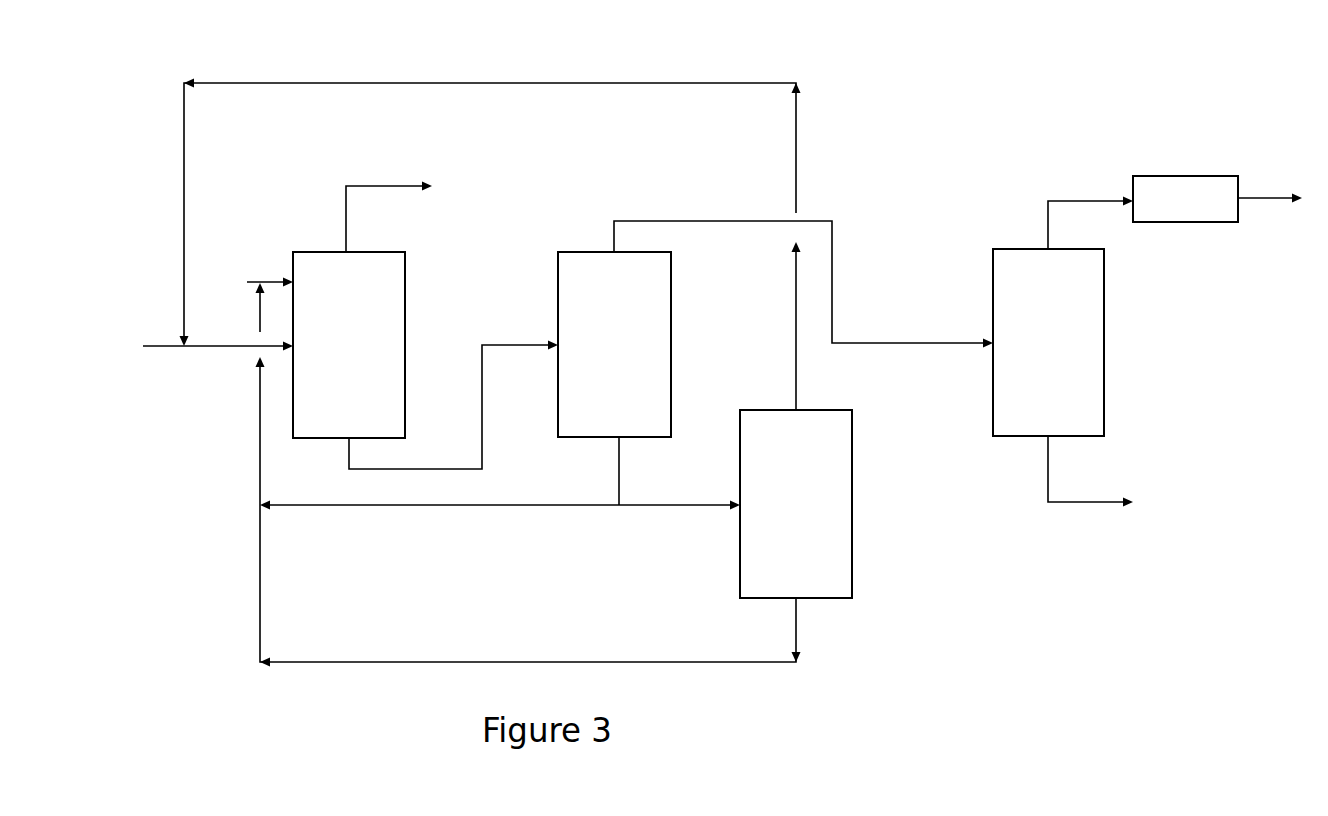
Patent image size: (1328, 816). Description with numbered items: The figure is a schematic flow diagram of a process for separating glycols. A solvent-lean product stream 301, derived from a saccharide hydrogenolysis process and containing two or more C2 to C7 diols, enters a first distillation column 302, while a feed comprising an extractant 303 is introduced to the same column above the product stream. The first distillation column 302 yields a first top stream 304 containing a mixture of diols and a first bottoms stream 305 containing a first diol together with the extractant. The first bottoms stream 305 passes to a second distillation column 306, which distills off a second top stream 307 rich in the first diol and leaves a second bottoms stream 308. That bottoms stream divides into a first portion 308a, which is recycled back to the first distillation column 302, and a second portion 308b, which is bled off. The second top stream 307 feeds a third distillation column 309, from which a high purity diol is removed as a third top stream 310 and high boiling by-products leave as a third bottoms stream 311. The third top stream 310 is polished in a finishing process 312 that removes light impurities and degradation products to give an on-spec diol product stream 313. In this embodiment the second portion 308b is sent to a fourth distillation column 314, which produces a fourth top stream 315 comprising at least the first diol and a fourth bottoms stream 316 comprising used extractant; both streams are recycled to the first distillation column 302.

The solvent-lean product stream 301 is at (194, 336).
The first distillation column 302 is at (349, 345).
The extractant 303 is at (259, 288).
The first top stream 304 is at (389, 199).
The first bottoms stream 305 is at (453, 389).
The second distillation column 306 is at (614, 344).
The second top stream 307 is at (803, 263).
The second bottoms stream 308 is at (645, 471).
The first portion of the second bottoms stream 308a is at (439, 524).
The second portion of the second bottoms stream 308b is at (679, 524).
The third distillation column 309 is at (1048, 342).
The third top stream 310 is at (1087, 206).
The third bottoms stream 311 is at (1090, 492).
The finishing process 312 is at (1185, 199).
The on-spec diol product stream 313 is at (1272, 183).
The fourth distillation column 314 is at (796, 420).
The fourth top stream 315 is at (490, 195).
The fourth bottoms stream 316 is at (528, 512).